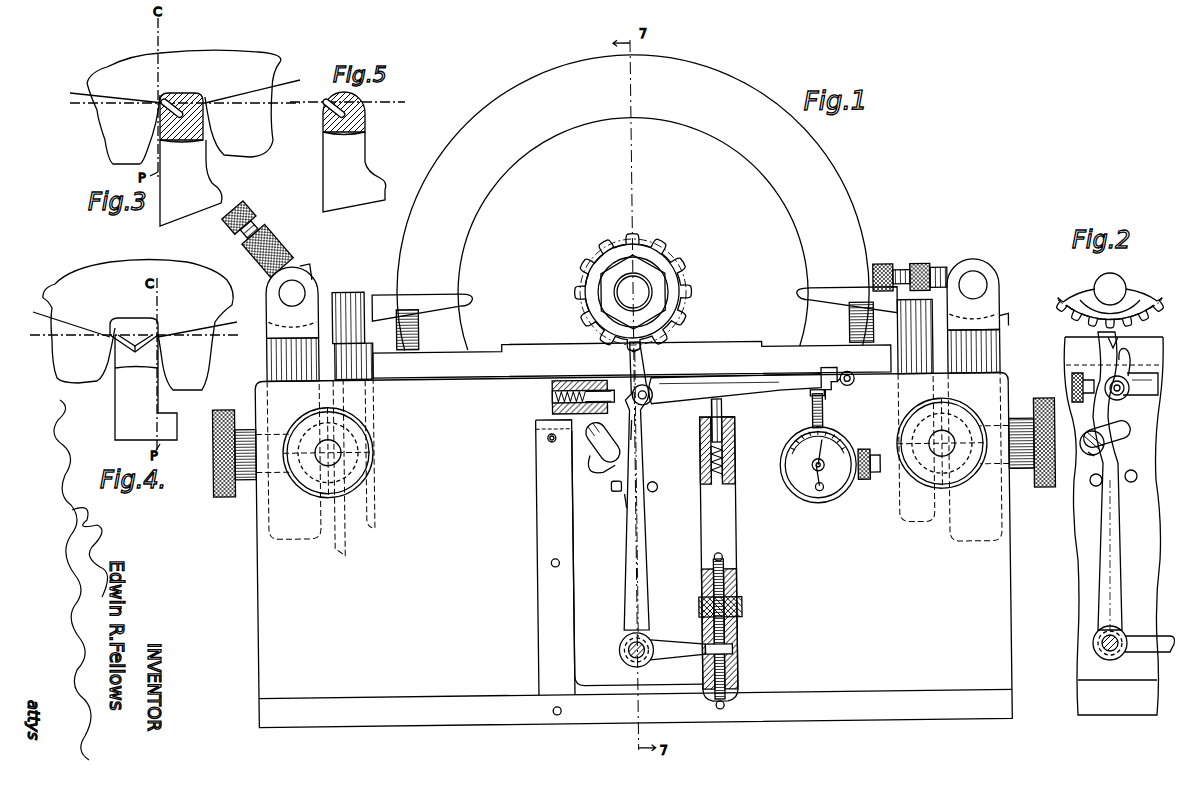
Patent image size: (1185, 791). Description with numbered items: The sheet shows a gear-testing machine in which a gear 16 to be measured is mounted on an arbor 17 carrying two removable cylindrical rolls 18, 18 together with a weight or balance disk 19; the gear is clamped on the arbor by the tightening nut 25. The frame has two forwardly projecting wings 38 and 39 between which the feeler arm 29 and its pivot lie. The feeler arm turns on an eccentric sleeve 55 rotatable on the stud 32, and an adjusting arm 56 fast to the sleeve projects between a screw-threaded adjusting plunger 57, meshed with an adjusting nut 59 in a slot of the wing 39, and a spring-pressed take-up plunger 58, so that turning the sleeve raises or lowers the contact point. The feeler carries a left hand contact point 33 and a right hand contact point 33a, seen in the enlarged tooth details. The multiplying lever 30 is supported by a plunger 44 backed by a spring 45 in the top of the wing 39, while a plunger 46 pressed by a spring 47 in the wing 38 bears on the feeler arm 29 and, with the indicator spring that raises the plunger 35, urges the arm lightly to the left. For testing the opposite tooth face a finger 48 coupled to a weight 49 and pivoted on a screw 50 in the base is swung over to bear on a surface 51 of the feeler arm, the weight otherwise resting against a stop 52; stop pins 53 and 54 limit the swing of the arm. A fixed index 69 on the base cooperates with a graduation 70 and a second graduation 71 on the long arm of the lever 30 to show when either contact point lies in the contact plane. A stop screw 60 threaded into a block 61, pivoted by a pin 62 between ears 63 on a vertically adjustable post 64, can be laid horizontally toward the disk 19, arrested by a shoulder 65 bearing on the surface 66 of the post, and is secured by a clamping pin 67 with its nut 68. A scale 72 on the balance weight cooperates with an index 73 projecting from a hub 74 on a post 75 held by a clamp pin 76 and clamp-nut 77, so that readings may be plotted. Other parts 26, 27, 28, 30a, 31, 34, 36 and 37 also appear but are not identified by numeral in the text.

In FIG. 3, the gear 16 is at (184, 107).
In FIG. 4, the gear 16 is at (138, 325).
In FIG. 1, the gear 16 is at (682, 286).
In FIG. 2, the gear 16 is at (1147, 304).
In FIG. 1, the arbor 17 is at (640, 286).
In FIG. 2, the arbor 17 is at (1114, 289).
In FIG. 1, the cylindrical rolls 18 is at (592, 270).
In FIG. 2, the cylindrical rolls 18 is at (1076, 299).
In FIG. 1, the balance disk 19 is at (815, 172).
In FIG. 1, the tightening nut 25 is at (618, 272).
In FIG. 1, the hexagonal nut 26 is at (668, 307).
In FIG. 1, the cross bar 27 is at (538, 348).
In FIG. 1, the frame 28 is at (990, 628).
In FIG. 1, the feeler arm 29 is at (626, 530).
In FIG. 2, the feeler arm 29 is at (1112, 532).
In FIG. 1, the multiplying lever 30 is at (700, 384).
In FIG. 2, the multiplying lever 30 is at (1142, 392).
In FIG. 1, the lever pivot 30a is at (656, 384).
In FIG. 2, the lever pivot 30a is at (1130, 362).
In FIG. 1, the dial indicator 31 is at (786, 458).
In FIG. 1, the stud 32 is at (626, 646).
In FIG. 2, the stud 32 is at (1106, 650).
In FIG. 3, the left hand contact point 33 is at (161, 104).
In FIG. 5, the left hand contact point 33 is at (325, 103).
In FIG. 4, the left hand contact point 33 is at (113, 340).
In FIG. 3, the right hand contact point 33a is at (204, 104).
In FIG. 4, the right hand contact point 33a is at (160, 337).
In FIG. 3, the tool holder / tooth 34 is at (209, 178).
In FIG. 5, the tool holder / tooth 34 is at (388, 194).
In FIG. 4, the tool holder / tooth 34 is at (182, 414).
In FIG. 1, the tool holder / tooth 34 is at (645, 356).
In FIG. 2, the tool holder / tooth 34 is at (1118, 350).
In FIG. 1, the plunger 35 is at (824, 414).
In FIG. 1, the indicator needle 36 is at (836, 450).
In FIG. 1, the dial scale 37 is at (803, 442).
In FIG. 1, the wing 38 is at (540, 510).
In FIG. 1, the wing 39 is at (736, 528).
In FIG. 1, the plunger 44 is at (712, 410).
In FIG. 1, the spring 45 is at (711, 458).
In FIG. 1, the plunger 46 is at (606, 390).
In FIG. 2, the plunger 46 is at (1088, 380).
In FIG. 1, the spring 47 is at (576, 380).
In FIG. 1, the finger 48 is at (600, 462).
In FIG. 2, the finger 48 is at (1094, 433).
In FIG. 1, the weight 49 is at (597, 432).
In FIG. 2, the weight 49 is at (1124, 435).
In FIG. 1, the screw 50 is at (612, 486).
In FIG. 2, the screw 50 is at (1094, 435).
In FIG. 1, the surface 51 is at (630, 434).
In FIG. 1, the stop 52 is at (574, 436).
In FIG. 1, the stop pin 53 is at (622, 500).
In FIG. 2, the stop pin 53 is at (1095, 487).
In FIG. 1, the stop pin 54 is at (658, 490).
In FIG. 2, the stop pin 54 is at (1133, 470).
In FIG. 1, the eccentric sleeve 55 is at (650, 662).
In FIG. 2, the eccentric sleeve 55 is at (1124, 652).
In FIG. 1, the adjusting arm 56 is at (665, 642).
In FIG. 2, the adjusting arm 56 is at (1160, 636).
In FIG. 1, the adjusting plunger 57 is at (724, 620).
In FIG. 1, the take-up plunger 58 is at (732, 652).
In FIG. 1, the adjusting nut 59 is at (742, 600).
In FIG. 1, the screw 60 is at (254, 204).
In FIG. 1, the block 61 is at (286, 252).
In FIG. 1, the pin 62 is at (302, 288).
In FIG. 1, the ears 63 is at (990, 270).
In FIG. 1, the post 64 is at (270, 352).
In FIG. 1, the shoulder 65 is at (314, 266).
In FIG. 1, the surface 66 is at (332, 296).
In FIG. 1, the clamping pin 67 is at (262, 492).
In FIG. 1, the nut 68 is at (222, 492).
In FIG. 1, the fixed index 69 is at (855, 382).
In FIG. 1, the graduation 70 is at (832, 370).
In FIG. 1, the second graduation 71 is at (830, 398).
In FIG. 1, the scale 72 is at (430, 318).
In FIG. 1, the index 73 is at (462, 296).
In FIG. 1, the hub 74 is at (374, 345).
In FIG. 1, the post 75 is at (366, 370).
In FIG. 1, the clamp pin 76 is at (334, 446).
In FIG. 1, the clamp-nut 77 is at (373, 462).